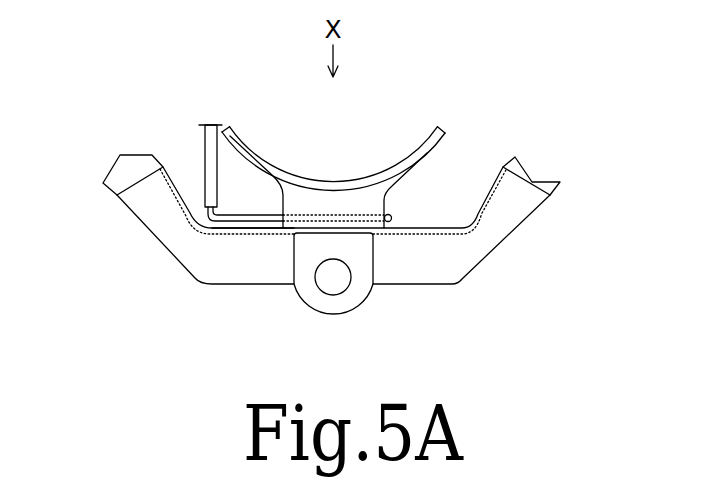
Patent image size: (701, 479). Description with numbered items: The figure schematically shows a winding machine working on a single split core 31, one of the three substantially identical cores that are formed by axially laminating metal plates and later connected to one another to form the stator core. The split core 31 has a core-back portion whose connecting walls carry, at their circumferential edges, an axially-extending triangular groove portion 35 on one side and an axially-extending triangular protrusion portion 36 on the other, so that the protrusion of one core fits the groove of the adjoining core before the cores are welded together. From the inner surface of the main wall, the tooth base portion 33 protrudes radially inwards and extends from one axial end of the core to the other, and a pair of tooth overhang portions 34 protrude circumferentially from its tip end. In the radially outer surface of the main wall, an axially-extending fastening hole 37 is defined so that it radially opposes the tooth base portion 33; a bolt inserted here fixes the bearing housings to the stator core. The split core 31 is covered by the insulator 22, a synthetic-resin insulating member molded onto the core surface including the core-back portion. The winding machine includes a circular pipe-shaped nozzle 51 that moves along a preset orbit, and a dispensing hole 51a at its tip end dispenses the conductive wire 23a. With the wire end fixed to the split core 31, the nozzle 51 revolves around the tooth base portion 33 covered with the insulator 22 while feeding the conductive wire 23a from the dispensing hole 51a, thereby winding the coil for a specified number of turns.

The insulator 22 is at (507, 233).
The conductive wire 23a is at (245, 235).
The split core 31 is at (323, 315).
The tooth base portion 33 is at (358, 202).
The tooth overhang portion 34 is at (422, 147).
The triangular groove portion 35 is at (547, 182).
The triangular protrusion portion 36 is at (117, 164).
The fastening hole 37 is at (335, 279).
The nozzle 51 is at (203, 145).
The dispensing hole 51a is at (220, 212).